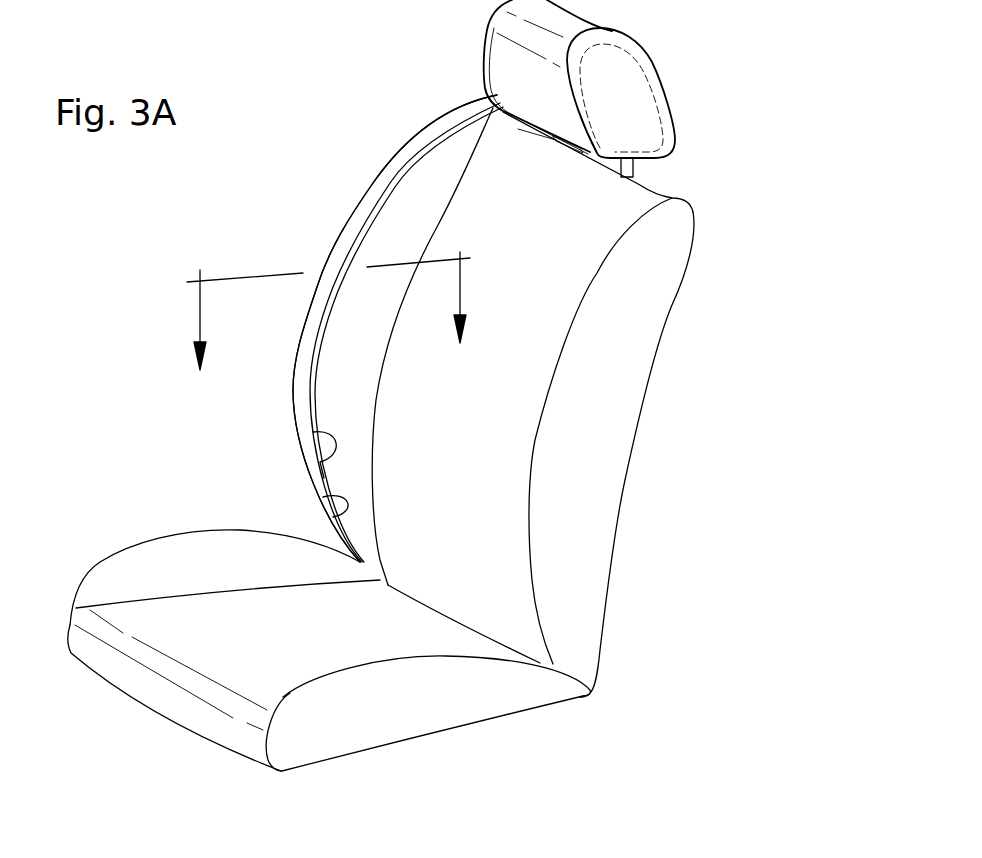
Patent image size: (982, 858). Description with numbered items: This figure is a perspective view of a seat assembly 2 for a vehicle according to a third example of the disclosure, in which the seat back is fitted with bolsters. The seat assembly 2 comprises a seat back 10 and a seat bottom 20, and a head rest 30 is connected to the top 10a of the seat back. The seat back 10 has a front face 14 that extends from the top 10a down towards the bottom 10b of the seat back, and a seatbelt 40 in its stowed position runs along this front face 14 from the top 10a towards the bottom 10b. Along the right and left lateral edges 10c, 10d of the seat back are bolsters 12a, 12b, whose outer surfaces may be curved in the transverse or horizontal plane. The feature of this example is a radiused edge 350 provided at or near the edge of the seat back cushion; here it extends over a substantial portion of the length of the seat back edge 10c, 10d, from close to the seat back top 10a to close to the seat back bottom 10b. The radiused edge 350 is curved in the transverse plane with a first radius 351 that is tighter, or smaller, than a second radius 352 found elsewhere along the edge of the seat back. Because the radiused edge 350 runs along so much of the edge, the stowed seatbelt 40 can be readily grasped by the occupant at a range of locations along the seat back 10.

The seat assembly 2 is at (655, 542).
The seat back 10 is at (537, 317).
The top of the seat back 10a is at (670, 193).
The bottom of the seat back 10b is at (500, 645).
The right lateral edge of the seat back 10c is at (303, 330).
The left lateral edge of the seat back 10d is at (630, 388).
The bolster 12a is at (337, 393).
The bolster 12b is at (560, 483).
The front face of the seat back 14 is at (481, 165).
The seat bottom 20 is at (360, 718).
The head rest 30 is at (636, 92).
The seatbelt 40 is at (397, 158).
The radiused edge 350 is at (357, 245).
The first radius 351 is at (313, 432).
The second radius 352 is at (323, 497).